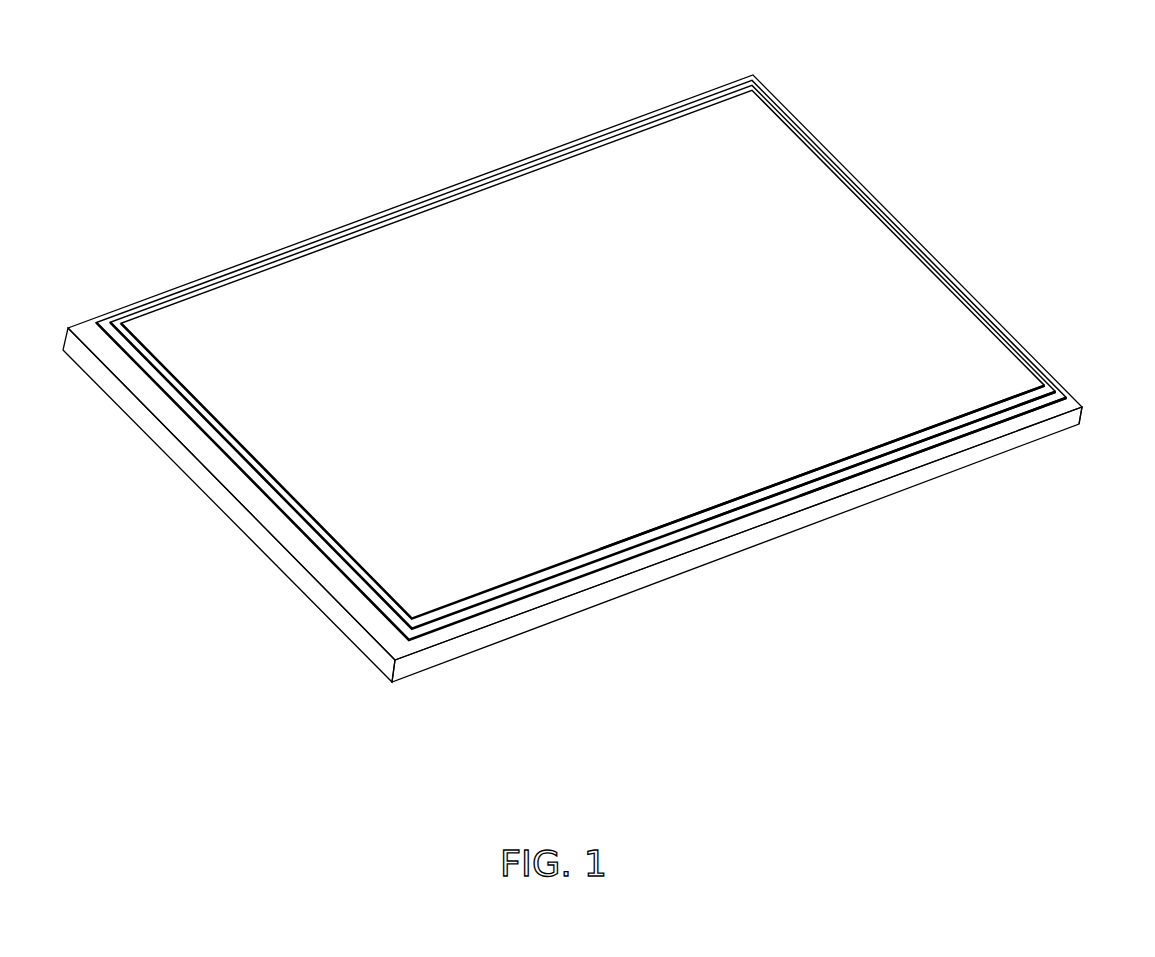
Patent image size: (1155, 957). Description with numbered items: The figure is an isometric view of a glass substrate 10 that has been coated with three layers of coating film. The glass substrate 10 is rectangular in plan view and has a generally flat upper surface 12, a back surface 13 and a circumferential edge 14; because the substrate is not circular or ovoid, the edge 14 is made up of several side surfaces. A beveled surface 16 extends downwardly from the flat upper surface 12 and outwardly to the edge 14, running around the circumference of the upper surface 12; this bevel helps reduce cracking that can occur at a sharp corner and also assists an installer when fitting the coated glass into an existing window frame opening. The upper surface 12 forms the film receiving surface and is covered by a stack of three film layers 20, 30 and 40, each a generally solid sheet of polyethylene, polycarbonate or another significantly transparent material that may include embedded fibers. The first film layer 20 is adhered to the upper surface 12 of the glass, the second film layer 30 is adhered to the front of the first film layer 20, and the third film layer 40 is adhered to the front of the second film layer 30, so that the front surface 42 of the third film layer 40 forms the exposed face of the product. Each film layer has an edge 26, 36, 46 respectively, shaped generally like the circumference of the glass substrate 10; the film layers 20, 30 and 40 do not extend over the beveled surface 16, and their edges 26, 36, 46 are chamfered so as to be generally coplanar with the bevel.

The glass substrate 10 is at (587, 387).
The upper surface 12 is at (596, 402).
The back surface 13 is at (440, 672).
The edge 14 is at (555, 618).
The beveled surface 16 is at (1065, 390).
The film layer 20 is at (150, 302).
The edge 26 is at (848, 491).
The film layer 30 is at (198, 292).
The edge 36 is at (718, 521).
The film layer 40 is at (242, 284).
The front surface 42 is at (586, 369).
The edge 46 is at (640, 539).